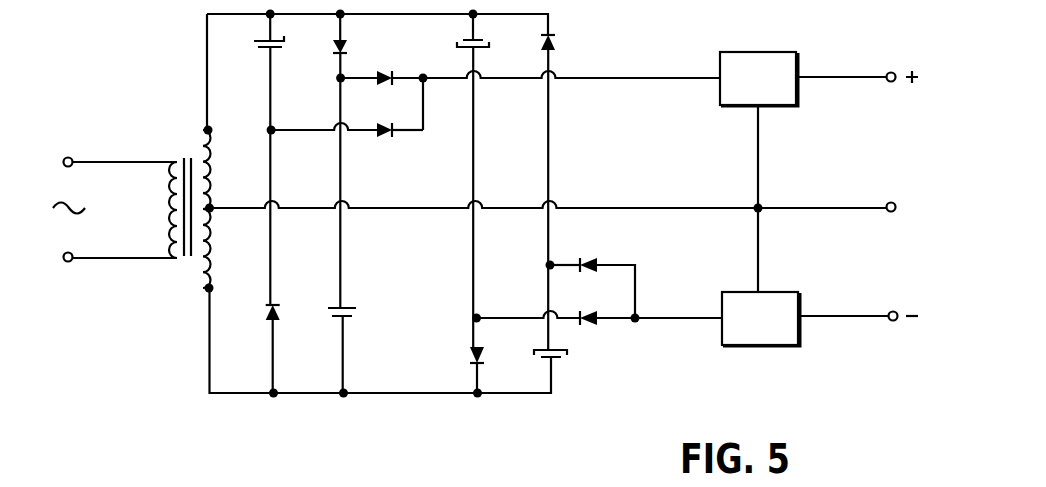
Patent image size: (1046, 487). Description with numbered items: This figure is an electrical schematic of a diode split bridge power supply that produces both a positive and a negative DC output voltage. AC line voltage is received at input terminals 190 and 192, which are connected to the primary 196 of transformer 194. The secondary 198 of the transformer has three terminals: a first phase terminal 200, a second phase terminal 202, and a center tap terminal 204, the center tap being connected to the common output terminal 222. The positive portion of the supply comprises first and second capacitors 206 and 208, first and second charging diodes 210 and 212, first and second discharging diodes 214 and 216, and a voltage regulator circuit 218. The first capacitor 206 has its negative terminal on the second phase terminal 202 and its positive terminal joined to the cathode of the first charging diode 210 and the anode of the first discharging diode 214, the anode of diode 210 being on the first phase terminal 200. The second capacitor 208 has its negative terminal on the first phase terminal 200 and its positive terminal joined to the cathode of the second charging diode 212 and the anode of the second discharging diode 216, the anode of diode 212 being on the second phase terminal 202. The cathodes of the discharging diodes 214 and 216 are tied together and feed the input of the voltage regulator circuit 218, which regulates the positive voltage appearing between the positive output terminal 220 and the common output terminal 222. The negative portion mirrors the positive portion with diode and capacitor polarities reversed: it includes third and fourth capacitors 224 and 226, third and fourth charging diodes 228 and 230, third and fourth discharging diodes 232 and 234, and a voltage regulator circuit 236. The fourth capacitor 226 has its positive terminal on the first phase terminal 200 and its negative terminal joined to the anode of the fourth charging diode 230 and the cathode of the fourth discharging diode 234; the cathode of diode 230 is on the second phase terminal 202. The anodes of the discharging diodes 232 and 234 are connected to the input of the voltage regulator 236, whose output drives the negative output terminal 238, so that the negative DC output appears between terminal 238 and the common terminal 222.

The input terminal 190 is at (69, 157).
The input terminal 192 is at (70, 262).
The transformer 194 is at (141, 208).
The primary 196 is at (172, 264).
The secondary 198 is at (199, 280).
The first phase terminal 200 is at (211, 128).
The second phase terminal 202 is at (212, 287).
The center tap terminal 204 is at (213, 206).
The first capacitor 206 is at (354, 318).
The second capacitor 208 is at (285, 42).
The first charging diode 210 is at (347, 45).
The second charging diode 212 is at (280, 312).
The first discharging diode 214 is at (380, 76).
The second discharging diode 216 is at (380, 133).
The voltage regulator circuit 218 is at (760, 52).
The positive output terminal 220 is at (889, 72).
The common output terminal 222 is at (889, 212).
The third capacitor 224 is at (566, 352).
The fourth capacitor 226 is at (489, 47).
The third charging diode 228 is at (556, 40).
The fourth charging diode 230 is at (470, 350).
The third discharging diode 232 is at (590, 262).
The fourth discharging diode 234 is at (592, 323).
The voltage regulator circuit 236 is at (775, 346).
The negative output terminal 238 is at (892, 322).